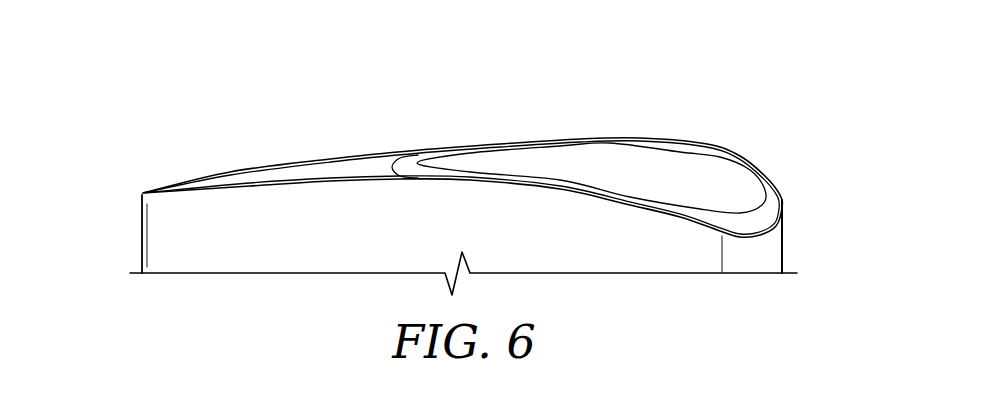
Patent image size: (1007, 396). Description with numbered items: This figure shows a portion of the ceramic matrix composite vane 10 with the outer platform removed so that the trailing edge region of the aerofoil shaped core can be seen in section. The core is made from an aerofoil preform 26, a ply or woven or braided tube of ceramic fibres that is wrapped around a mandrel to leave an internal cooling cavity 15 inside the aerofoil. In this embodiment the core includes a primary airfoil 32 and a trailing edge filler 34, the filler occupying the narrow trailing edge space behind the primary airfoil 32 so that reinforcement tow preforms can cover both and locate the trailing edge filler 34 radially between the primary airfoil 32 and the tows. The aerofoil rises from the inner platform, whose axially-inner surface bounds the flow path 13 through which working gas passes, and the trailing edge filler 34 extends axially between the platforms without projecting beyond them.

The vane 10 is at (760, 113).
The flow path 13 is at (768, 247).
The internal cooling cavity 15 is at (615, 158).
The aerofoil preform 26 is at (765, 190).
The primary airfoil 32 is at (707, 155).
The trailing edge filler 34 is at (315, 175).